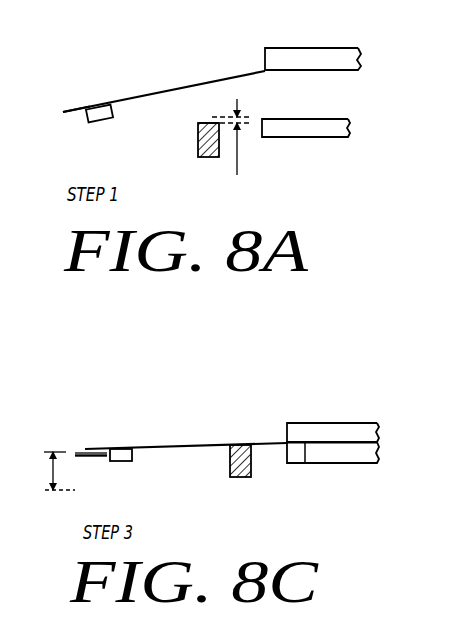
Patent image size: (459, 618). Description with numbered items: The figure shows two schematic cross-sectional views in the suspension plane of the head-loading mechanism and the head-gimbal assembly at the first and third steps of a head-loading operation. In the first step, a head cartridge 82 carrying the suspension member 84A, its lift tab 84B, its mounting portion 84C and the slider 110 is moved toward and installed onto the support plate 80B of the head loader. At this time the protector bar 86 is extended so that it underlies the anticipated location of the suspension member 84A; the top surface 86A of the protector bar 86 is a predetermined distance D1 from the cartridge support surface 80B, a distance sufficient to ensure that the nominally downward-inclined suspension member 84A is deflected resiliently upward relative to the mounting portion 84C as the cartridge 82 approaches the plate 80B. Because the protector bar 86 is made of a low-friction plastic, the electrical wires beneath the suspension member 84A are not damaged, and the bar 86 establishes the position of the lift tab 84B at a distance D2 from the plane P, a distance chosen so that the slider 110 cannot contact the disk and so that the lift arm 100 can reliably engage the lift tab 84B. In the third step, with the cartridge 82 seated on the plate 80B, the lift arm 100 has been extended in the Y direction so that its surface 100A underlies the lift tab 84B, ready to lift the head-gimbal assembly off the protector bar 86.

In FIG. 8A, the head cartridge 82 is at (323, 58).
In FIG. 8C, the head cartridge 82 is at (340, 431).
In FIG. 8A, the suspension member 84A is at (158, 92).
In FIG. 8C, the suspension member 84A is at (168, 443).
In FIG. 8A, the lift tab 84B is at (78, 109).
In FIG. 8A, the mounting portion 84C is at (303, 71).
In FIG. 8C, the mounting portion 84C is at (306, 445).
In FIG. 8A, the protector bar 86 is at (198, 141).
In FIG. 8C, the protector bar 86 is at (229, 470).
In FIG. 8A, the top surface of protector bar 86A is at (221, 122).
In FIG. 8A, the support plate 80B is at (324, 129).
In FIG. 8C, the support plate 80B is at (362, 452).
In FIG. 8A, the slider 110 is at (113, 111).
In FIG. 8C, the slider 110 is at (133, 452).
In FIG. 8C, the lift arm 100 is at (93, 457).
In FIG. 8C, the contact surface of pad 100A is at (85, 452).
In FIG. 8A, the predetermined distance D1 is at (236, 148).
In FIG. 8C, the distance D2 is at (58, 470).
In FIG. 8C, the plane P is at (36, 487).